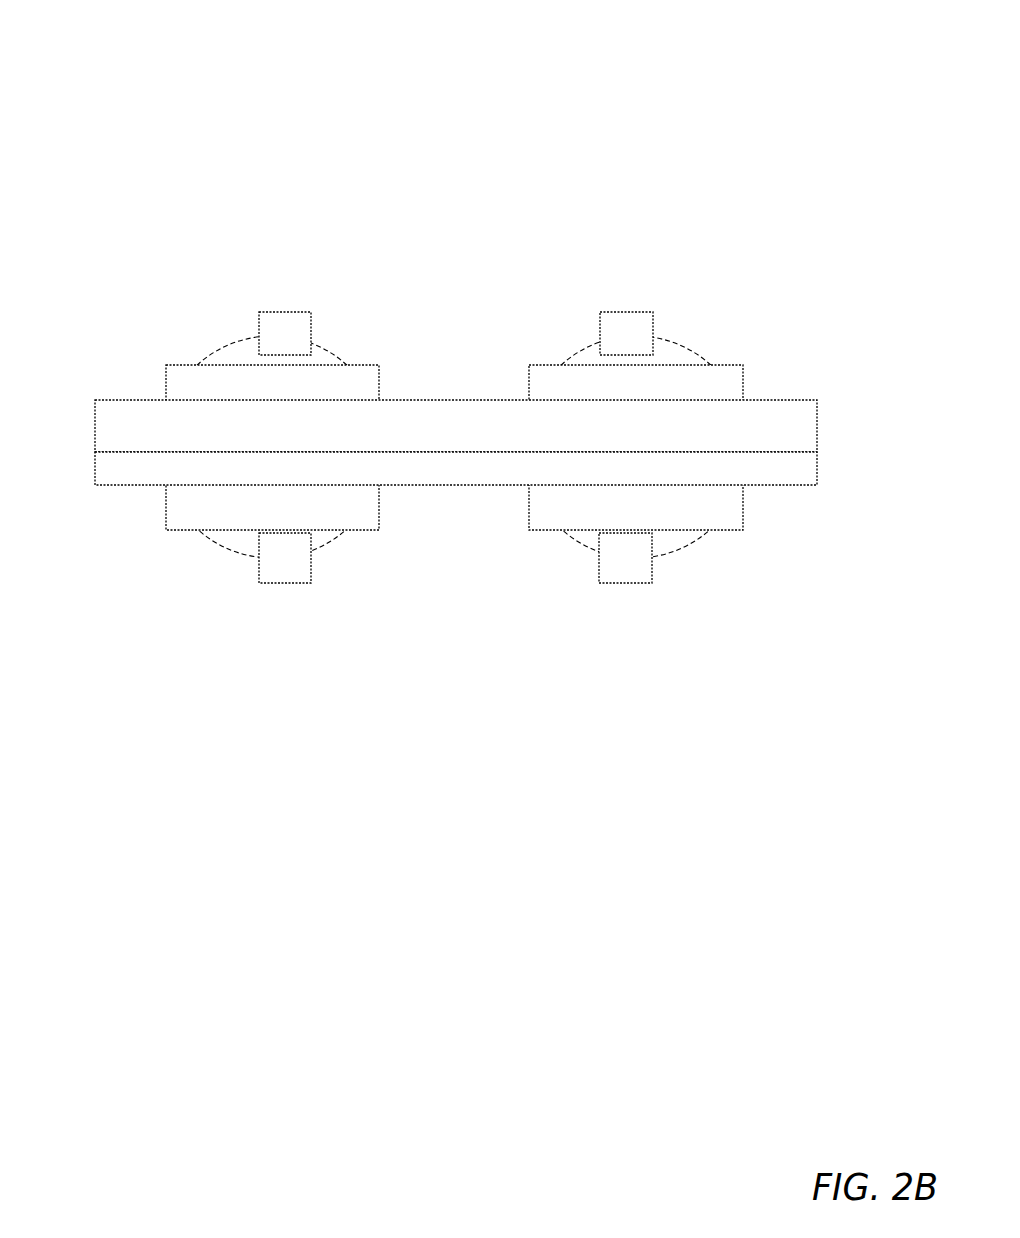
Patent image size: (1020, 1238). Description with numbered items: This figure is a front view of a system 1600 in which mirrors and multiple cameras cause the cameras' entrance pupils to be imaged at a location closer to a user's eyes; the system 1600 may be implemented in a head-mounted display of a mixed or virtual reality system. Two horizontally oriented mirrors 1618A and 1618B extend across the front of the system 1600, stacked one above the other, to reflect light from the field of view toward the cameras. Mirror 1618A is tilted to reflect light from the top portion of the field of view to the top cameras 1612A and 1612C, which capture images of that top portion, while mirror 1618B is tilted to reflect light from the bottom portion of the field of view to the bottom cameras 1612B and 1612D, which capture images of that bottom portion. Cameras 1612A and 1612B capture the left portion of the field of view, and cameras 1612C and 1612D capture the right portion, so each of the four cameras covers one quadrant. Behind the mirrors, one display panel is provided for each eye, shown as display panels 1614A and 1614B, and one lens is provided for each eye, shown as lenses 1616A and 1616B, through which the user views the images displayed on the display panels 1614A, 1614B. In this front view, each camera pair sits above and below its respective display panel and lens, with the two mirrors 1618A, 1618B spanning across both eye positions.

The system 1600 is at (162, 92).
The top camera 1612A is at (649, 345).
The bottom camera 1612B is at (648, 569).
The top camera 1612C is at (308, 345).
The bottom camera 1612D is at (308, 569).
The display panel 1614A is at (664, 396).
The display panel 1614B is at (302, 396).
The lens 1616A is at (683, 547).
The lens 1616B is at (222, 550).
The mirror 1618A is at (478, 440).
The mirror 1618B is at (478, 483).